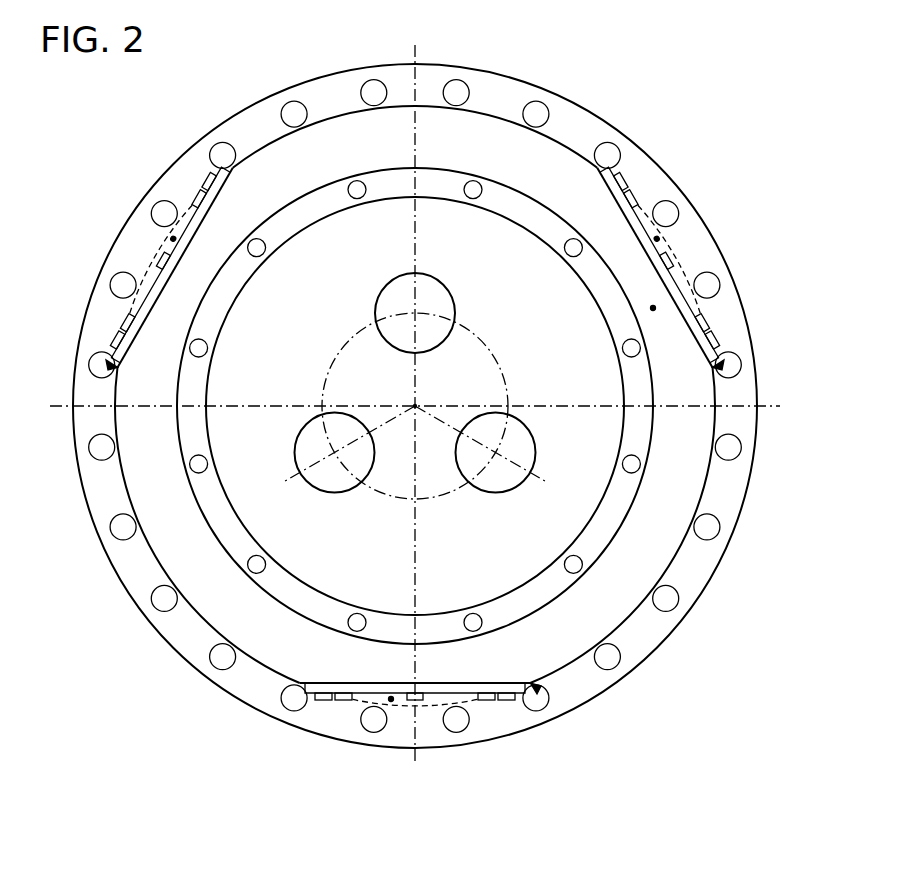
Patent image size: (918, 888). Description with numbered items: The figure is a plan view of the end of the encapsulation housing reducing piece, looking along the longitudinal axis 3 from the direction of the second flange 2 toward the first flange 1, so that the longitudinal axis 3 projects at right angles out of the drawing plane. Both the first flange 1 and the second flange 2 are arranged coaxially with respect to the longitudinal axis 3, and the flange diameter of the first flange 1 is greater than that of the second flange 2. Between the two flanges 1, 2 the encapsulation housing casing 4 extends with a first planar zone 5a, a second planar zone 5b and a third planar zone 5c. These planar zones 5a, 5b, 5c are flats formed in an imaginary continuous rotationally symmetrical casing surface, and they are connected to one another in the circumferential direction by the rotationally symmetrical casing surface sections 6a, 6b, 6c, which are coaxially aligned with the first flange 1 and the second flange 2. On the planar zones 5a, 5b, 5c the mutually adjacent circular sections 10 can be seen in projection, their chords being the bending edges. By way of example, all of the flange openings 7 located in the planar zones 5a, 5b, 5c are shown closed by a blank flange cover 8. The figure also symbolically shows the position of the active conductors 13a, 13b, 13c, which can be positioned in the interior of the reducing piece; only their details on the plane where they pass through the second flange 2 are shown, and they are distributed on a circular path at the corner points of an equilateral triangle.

The first flange 1 is at (566, 98).
The second flange 2 is at (512, 184).
The longitudinal axis 3 is at (417, 404).
The encapsulation housing casing 4 is at (655, 308).
The first planar zone 5a is at (233, 168).
The second planar zone 5b is at (600, 168).
The third planar zone 5c is at (302, 686).
The rotationally symmetrical casing surface section 6a is at (344, 114).
The rotationally symmetrical casing surface section 6b is at (694, 574).
The rotationally symmetrical casing surface section 6c is at (136, 574).
The flange opening 7 is at (110, 364).
The blank flange cover 8 is at (160, 277).
The circular section 10 is at (172, 239).
The active conductor 13a is at (455, 302).
The active conductor 13b is at (494, 492).
The active conductor 13c is at (337, 492).